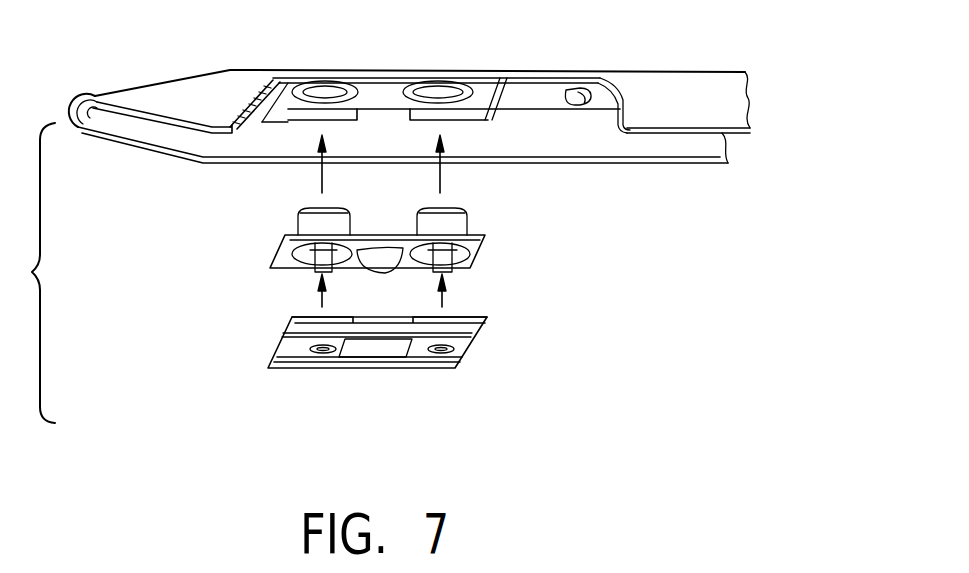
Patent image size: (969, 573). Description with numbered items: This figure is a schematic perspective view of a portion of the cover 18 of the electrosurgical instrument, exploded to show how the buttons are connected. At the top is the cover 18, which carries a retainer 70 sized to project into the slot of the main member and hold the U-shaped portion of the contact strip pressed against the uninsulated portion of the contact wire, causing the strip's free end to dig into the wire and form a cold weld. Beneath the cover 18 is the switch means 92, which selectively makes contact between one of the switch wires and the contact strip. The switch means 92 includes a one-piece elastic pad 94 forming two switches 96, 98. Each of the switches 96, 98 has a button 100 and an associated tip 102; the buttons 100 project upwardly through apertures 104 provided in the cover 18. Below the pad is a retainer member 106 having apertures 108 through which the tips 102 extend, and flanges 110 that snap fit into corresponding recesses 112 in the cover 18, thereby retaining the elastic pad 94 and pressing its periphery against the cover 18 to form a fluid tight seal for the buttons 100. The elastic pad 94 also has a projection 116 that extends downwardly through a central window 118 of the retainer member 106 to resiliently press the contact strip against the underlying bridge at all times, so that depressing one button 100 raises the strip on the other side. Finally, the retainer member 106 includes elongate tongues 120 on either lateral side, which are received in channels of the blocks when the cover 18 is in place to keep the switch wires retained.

The cover 18 is at (650, 72).
The retainer 70 is at (583, 106).
The switch means 92 is at (546, 280).
The one-piece elastic pad 94 is at (268, 254).
The switch 96 is at (303, 212).
The switch 98 is at (467, 208).
The buttons 100 is at (422, 210).
The tips 102 is at (436, 268).
The apertures 104 is at (400, 78).
The retainer member 106 is at (305, 372).
The apertures 108 is at (328, 356).
The flanges 110 is at (290, 317).
The recesses 112 is at (420, 119).
The projection 116 is at (383, 267).
The central window 118 is at (373, 343).
The elongate tongues 120 is at (462, 368).